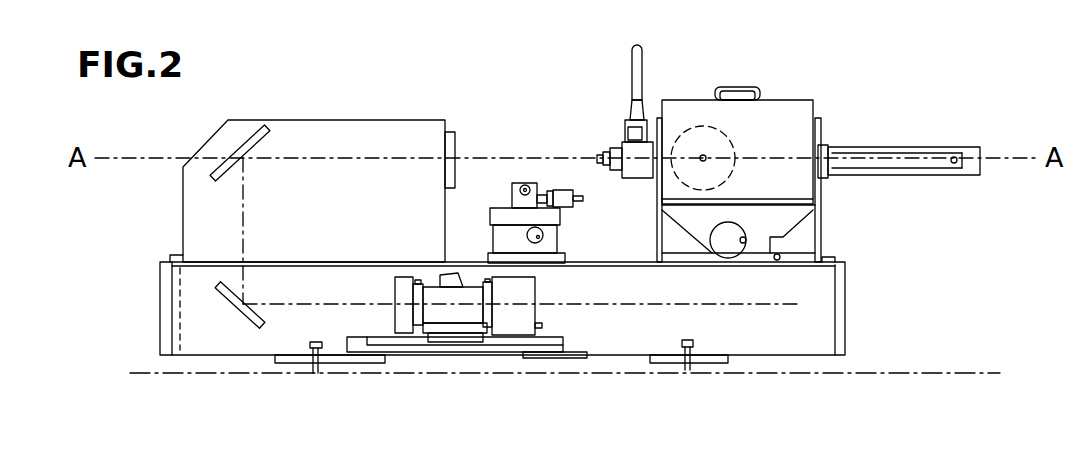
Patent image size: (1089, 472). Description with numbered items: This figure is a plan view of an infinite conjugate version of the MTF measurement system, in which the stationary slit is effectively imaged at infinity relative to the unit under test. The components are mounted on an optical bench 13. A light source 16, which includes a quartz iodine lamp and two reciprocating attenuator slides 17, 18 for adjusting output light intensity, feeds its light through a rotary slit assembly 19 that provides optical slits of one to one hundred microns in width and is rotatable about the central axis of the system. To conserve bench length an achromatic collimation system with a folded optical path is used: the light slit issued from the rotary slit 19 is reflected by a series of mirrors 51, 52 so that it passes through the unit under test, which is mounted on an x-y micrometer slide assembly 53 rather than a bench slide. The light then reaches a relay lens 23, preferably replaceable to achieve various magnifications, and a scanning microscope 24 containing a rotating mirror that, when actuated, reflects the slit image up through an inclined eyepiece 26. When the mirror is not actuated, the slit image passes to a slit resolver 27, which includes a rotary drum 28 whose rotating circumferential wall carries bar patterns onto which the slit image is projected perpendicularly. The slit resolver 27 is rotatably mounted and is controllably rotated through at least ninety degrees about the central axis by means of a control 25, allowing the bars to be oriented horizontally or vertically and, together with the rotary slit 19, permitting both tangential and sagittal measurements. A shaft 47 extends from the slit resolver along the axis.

The optical bench 13 is at (845, 325).
The light source 16 is at (535, 313).
The attenuator slide 17 is at (485, 323).
The attenuator slide 18 is at (417, 328).
The rotary slit assembly 19 is at (402, 333).
The relay lens 23 is at (597, 152).
The scanning microscope 24 is at (638, 168).
The control 25 is at (733, 250).
The inclined eyepiece 26 is at (633, 73).
The slit resolver 27 is at (805, 102).
The rotary drum 28 is at (733, 145).
The shaft 47 is at (918, 175).
The mirror 51 is at (242, 323).
The mirror 52 is at (253, 137).
The x-y micrometer slide assembly 53 is at (557, 263).